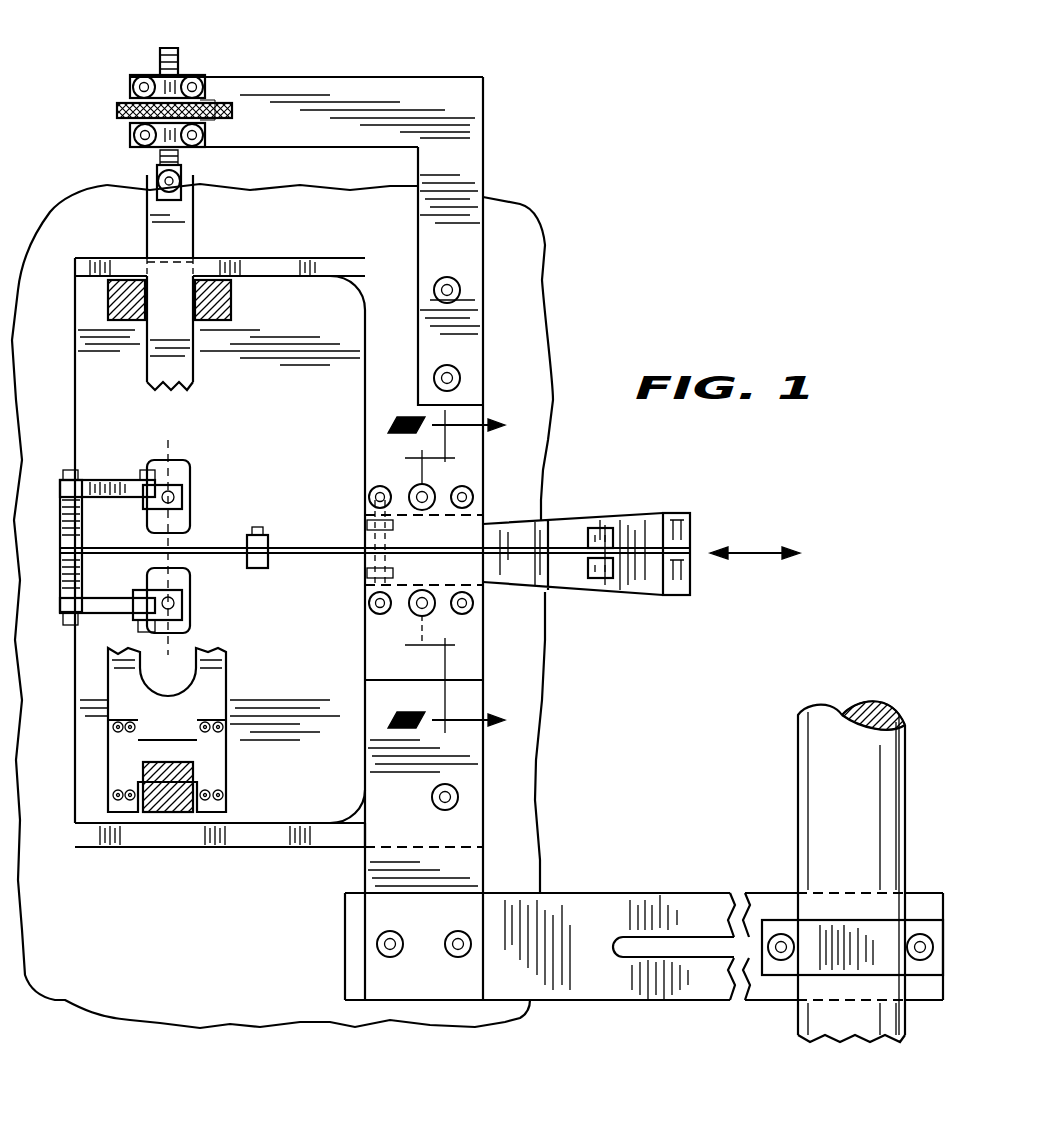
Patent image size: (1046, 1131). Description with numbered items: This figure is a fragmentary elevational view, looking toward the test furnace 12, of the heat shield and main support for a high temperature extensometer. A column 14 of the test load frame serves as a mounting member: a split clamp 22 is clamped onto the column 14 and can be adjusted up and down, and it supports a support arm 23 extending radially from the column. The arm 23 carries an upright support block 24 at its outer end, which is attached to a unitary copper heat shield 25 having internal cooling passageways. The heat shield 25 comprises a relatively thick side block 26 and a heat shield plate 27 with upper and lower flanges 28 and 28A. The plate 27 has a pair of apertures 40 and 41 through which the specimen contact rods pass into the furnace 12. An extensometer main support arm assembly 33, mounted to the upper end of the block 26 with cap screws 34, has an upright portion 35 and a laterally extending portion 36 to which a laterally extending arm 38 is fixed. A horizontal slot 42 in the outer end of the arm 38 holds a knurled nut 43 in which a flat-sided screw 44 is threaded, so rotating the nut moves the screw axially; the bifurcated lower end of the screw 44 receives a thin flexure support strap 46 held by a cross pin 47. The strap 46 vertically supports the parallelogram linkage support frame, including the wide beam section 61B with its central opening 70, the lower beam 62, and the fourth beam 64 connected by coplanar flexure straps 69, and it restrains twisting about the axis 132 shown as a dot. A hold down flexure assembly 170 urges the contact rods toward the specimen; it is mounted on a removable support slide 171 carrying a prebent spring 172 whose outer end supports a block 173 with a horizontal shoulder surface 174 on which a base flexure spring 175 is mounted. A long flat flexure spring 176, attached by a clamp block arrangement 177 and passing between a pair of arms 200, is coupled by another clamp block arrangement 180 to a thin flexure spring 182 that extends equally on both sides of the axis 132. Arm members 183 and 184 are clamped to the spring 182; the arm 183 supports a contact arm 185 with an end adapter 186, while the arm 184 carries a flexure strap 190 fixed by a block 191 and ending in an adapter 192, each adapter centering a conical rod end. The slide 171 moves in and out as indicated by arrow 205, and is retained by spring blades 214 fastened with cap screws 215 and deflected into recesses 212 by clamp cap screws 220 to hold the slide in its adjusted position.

The furnace 12 is at (545, 280).
The column 14 is at (822, 764).
The split clamp 22 is at (785, 976).
The support arm 23 is at (592, 892).
The upright support block 24 is at (470, 828).
The heat shield 25 is at (386, 262).
The side block 26 is at (468, 443).
The heat shield plate 27 is at (320, 290).
The upper flange 28 is at (110, 265).
The lower flange 28A is at (145, 833).
The extensometer main support arm assembly 33 is at (388, 90).
The cap screws 34 is at (460, 376).
The upright portion 35 is at (463, 200).
The laterally extending portion 36 is at (325, 92).
The laterally extending arm 38 is at (135, 79).
The aperture 40 is at (180, 458).
The aperture 41 is at (146, 580).
The horizontal slot 42 is at (120, 105).
The knurled nut 43 is at (235, 102).
The screw 44 is at (182, 50).
The flexure support strap 46 is at (196, 214).
The cross pin 47 is at (182, 178).
The beam section 61B is at (232, 302).
The second beam 62 is at (178, 812).
The fourth beam 64 is at (214, 690).
The flexure straps 69 is at (120, 752).
The central opening 70 is at (143, 320).
The axis 132 is at (170, 550).
The hold down flexure assembly 170 is at (556, 575).
The support slide 171 is at (483, 527).
The first prebent spring 172 is at (570, 522).
The block 173 is at (680, 597).
The horizontal shoulder surface 174 is at (682, 535).
The base flexure spring 175 is at (640, 530).
The long flat flexure spring 176 is at (368, 570).
The clamp block arrangement 177 is at (603, 530).
The clamp block arrangement 180 is at (268, 542).
The flexure spring 182 is at (116, 546).
The arm member 183 is at (62, 510).
The arm member 184 is at (62, 600).
The specimen rod end contact arm 185 is at (105, 480).
The end adapter 186 is at (182, 496).
The flexure strap 190 is at (100, 613).
The block 191 is at (62, 613).
The adapter 192 is at (183, 600).
The arms 200 is at (395, 528).
The arrow 205 is at (750, 550).
The recesses 212 is at (395, 490).
The spring blades 214 is at (368, 498).
The cap screws 215 is at (472, 495).
The clamp cap screws 220 is at (418, 488).